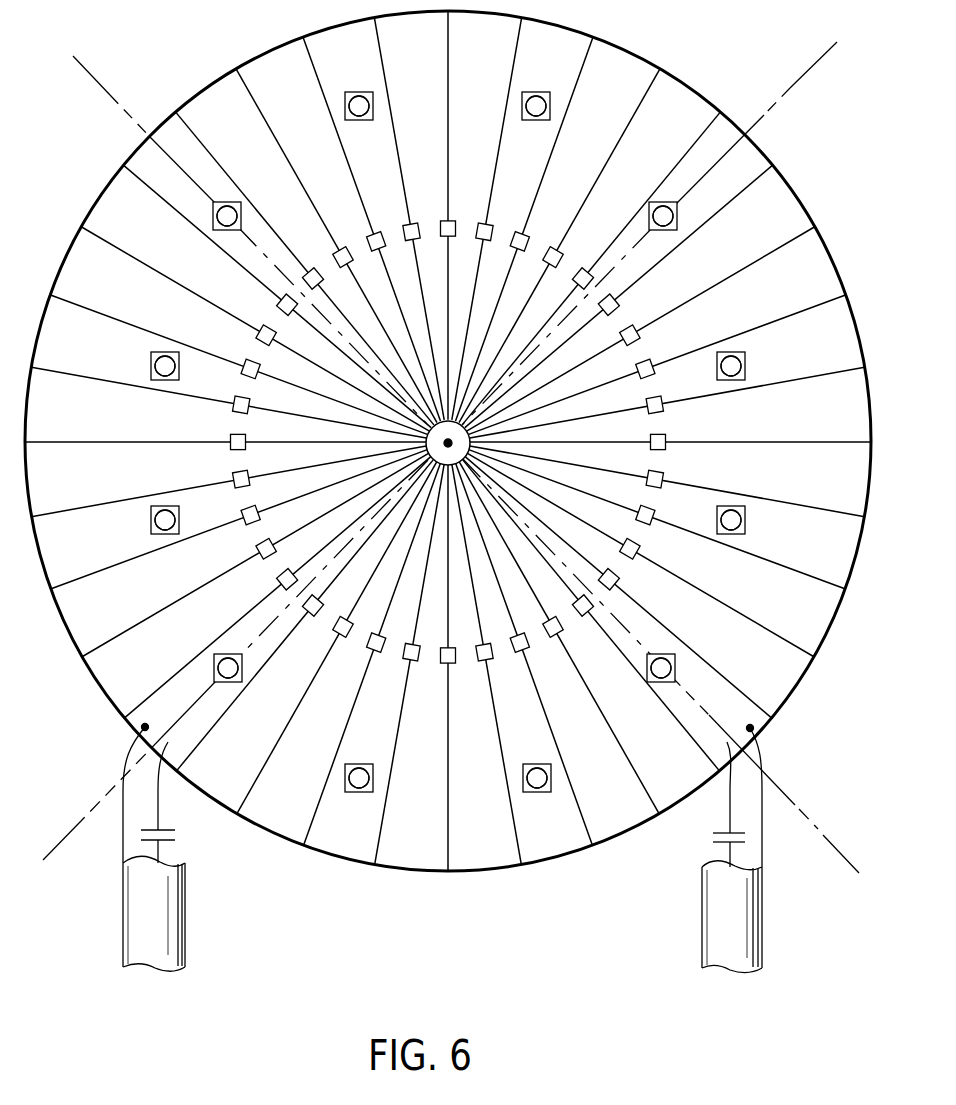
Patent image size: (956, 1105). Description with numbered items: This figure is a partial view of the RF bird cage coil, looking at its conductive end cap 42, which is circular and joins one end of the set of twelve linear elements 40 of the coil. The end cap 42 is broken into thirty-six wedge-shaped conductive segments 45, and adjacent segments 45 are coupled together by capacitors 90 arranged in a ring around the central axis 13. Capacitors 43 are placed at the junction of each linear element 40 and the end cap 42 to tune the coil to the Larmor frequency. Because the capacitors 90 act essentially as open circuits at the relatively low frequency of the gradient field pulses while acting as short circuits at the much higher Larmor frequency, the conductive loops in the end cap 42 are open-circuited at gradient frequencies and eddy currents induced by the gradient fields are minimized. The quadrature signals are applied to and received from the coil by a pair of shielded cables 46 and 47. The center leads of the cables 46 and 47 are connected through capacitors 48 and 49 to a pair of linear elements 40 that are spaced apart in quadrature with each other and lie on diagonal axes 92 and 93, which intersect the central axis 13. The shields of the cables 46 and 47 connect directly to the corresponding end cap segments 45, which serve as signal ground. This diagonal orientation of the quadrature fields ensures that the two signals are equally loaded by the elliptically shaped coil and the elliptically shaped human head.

The central axis 13 is at (448, 443).
The linear elements 40 is at (352, 120).
The conductive end cap 42 is at (338, 868).
The capacitors 43 is at (366, 93).
The wedge-shaped conductive segments 45 is at (462, 64).
The shielded cable 46 is at (186, 947).
The shielded cable 47 is at (763, 930).
The capacitor 48 is at (176, 840).
The capacitor 49 is at (728, 836).
The capacitors 90 is at (447, 221).
The diagonal axis 92 is at (110, 96).
The diagonal axis 93 is at (768, 118).